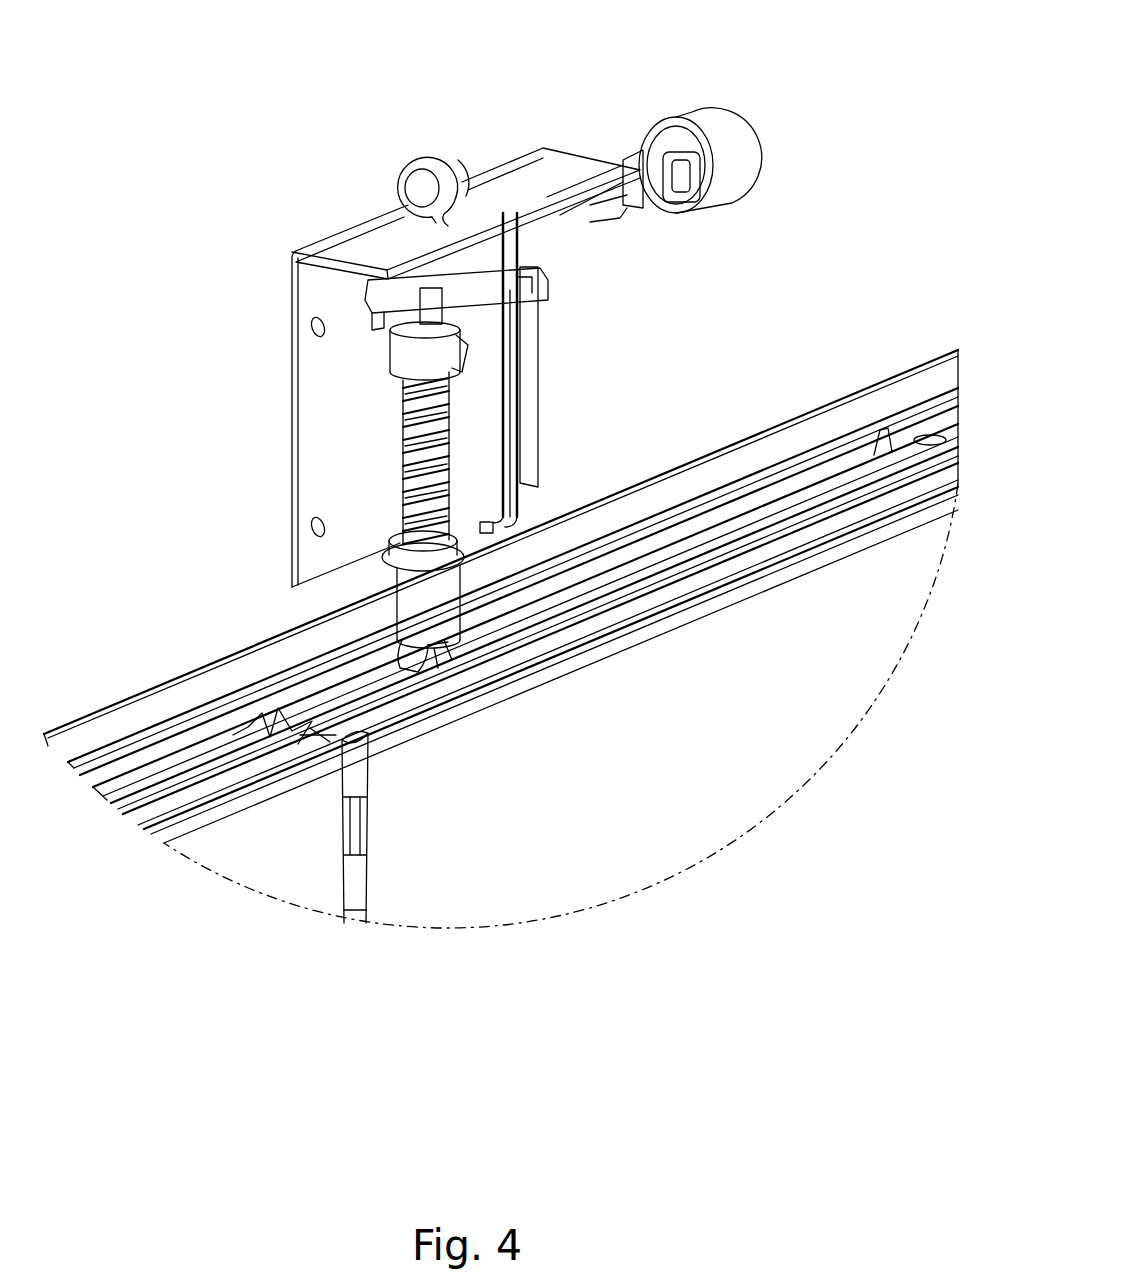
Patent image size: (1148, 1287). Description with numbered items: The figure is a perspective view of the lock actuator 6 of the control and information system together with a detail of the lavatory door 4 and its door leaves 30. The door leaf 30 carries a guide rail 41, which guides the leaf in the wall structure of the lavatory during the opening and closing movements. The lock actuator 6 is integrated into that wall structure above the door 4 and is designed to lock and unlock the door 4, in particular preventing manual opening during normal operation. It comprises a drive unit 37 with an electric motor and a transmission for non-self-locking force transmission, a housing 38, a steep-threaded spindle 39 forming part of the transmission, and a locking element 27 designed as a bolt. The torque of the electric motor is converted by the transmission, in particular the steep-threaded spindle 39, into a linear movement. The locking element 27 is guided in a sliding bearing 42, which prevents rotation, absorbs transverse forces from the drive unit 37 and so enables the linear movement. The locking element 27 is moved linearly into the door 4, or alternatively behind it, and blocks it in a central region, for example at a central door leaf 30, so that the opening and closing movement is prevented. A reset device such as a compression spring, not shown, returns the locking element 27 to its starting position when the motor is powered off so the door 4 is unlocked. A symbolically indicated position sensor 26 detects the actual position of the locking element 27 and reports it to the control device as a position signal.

The door 4 is at (789, 327).
The lock actuator 6 is at (243, 84).
The position sensor 26 is at (722, 143).
The locking element 27 is at (455, 650).
The door leaf 30 is at (667, 788).
The drive unit 37 is at (493, 340).
The housing 38 is at (532, 380).
The steep-threaded spindle 39 is at (447, 465).
The guide rail 41 is at (678, 490).
The sliding bearing 42 is at (440, 583).